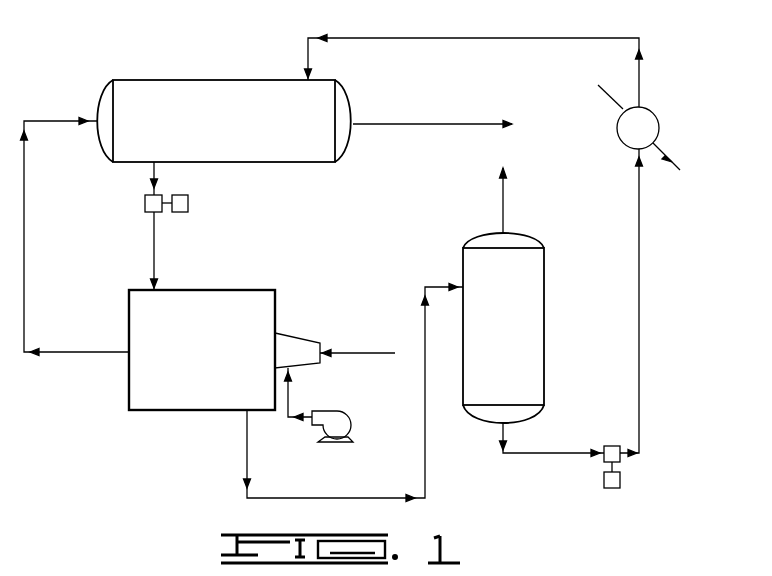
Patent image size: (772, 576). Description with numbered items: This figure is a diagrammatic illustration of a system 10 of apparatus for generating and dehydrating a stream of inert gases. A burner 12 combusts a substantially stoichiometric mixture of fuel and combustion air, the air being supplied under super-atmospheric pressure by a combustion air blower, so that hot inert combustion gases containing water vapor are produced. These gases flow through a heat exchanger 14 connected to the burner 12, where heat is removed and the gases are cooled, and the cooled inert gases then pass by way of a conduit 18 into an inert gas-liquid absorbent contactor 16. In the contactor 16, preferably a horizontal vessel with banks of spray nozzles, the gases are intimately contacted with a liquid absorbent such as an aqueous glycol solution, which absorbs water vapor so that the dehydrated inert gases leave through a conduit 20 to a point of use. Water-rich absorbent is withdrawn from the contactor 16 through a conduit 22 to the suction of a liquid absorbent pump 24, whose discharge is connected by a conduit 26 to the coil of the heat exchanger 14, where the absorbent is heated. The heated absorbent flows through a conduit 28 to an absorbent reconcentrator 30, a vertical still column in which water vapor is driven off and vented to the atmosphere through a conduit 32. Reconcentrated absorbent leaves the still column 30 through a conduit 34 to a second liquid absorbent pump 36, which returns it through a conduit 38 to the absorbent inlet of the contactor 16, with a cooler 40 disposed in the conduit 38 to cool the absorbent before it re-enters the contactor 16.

The system 10 is at (205, 72).
The burner 12 is at (293, 345).
The heat exchanger 14 is at (243, 292).
The inert gas-liquid absorbent contactor 16 is at (305, 153).
The conduit 18 is at (26, 247).
The conduit 20 is at (402, 126).
The conduit 22 is at (156, 172).
The liquid absorbent pump 24 is at (188, 203).
The conduit 26 is at (157, 247).
The conduit 28 is at (423, 382).
The absorbent reconcentrator 30 is at (537, 291).
The conduit 32 is at (505, 208).
The conduit 34 is at (535, 453).
The liquid absorbent pump 36 is at (612, 488).
The conduit 38 is at (642, 336).
The cooler 40 is at (625, 136).